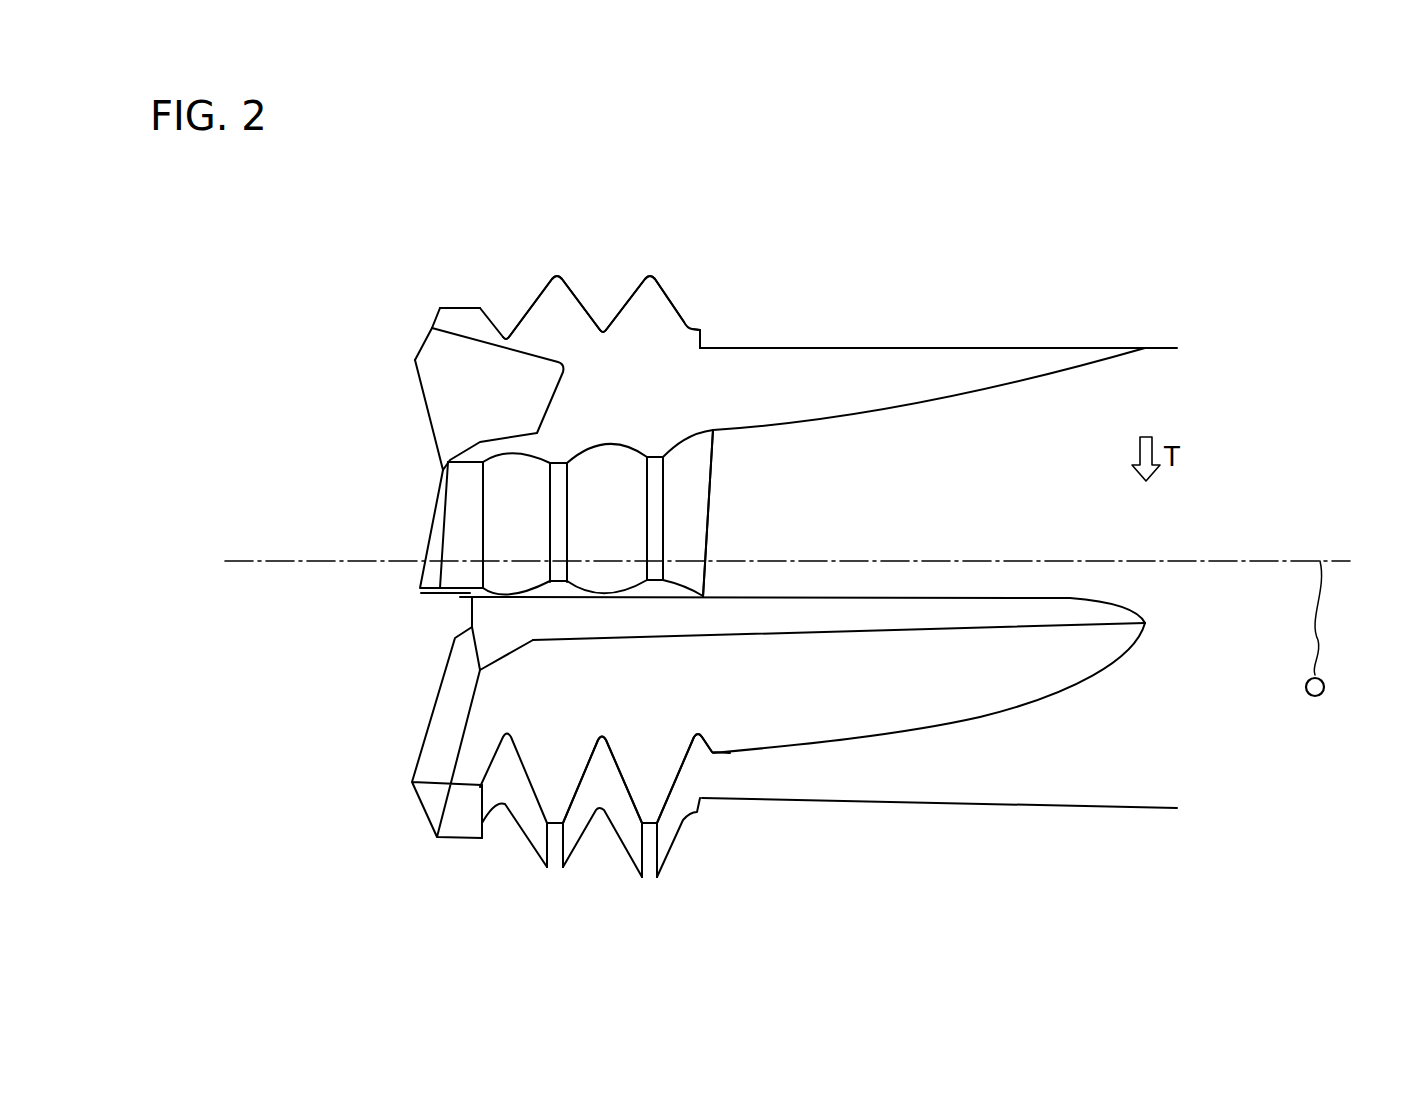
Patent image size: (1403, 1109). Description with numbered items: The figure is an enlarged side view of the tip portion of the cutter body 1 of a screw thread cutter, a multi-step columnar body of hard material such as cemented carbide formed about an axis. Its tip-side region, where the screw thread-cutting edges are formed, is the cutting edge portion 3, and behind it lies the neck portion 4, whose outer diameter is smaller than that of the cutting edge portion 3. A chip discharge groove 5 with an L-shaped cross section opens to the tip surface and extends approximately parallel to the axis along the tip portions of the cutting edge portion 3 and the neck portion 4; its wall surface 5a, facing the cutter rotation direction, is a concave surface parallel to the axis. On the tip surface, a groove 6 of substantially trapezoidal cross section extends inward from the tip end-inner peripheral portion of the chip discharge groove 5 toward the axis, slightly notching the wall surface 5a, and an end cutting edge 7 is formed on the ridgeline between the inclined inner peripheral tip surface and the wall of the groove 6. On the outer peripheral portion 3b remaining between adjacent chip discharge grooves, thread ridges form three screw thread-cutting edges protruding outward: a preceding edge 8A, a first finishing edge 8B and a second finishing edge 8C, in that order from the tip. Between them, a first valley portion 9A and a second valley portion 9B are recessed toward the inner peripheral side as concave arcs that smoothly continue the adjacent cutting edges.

The cutter body 1 is at (868, 126).
The cutting edge portion 3 is at (672, 221).
The outer peripheral portion 3b is at (724, 487).
The neck portion 4 is at (920, 281).
The chip discharge groove 5 is at (817, 383).
The wall surface 5a is at (660, 340).
The groove 6 is at (445, 393).
The end cutting edge 7 is at (430, 427).
The preceding edge 8A is at (457, 320).
The first finishing edge 8B is at (558, 297).
The second finishing edge 8C is at (647, 283).
The first valley portion 9A is at (505, 338).
The second valley portion 9B is at (604, 330).